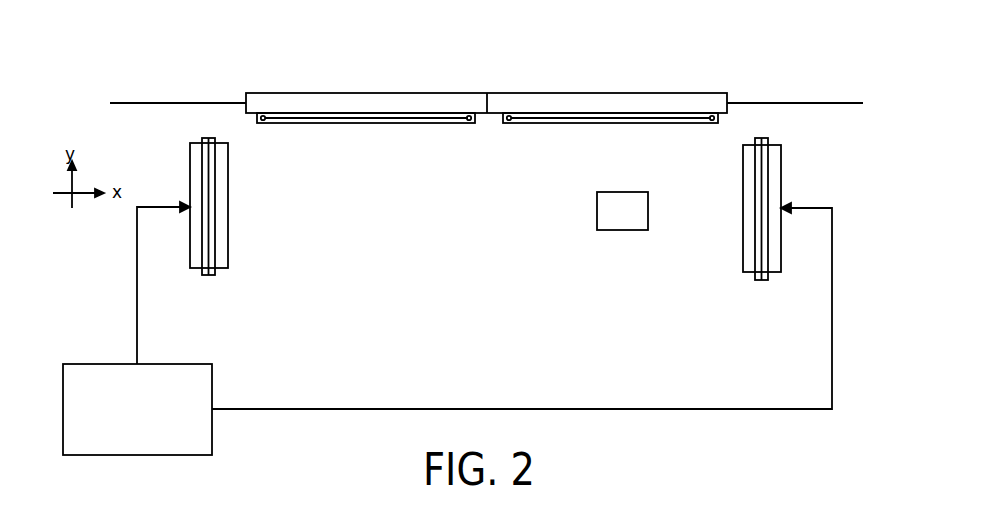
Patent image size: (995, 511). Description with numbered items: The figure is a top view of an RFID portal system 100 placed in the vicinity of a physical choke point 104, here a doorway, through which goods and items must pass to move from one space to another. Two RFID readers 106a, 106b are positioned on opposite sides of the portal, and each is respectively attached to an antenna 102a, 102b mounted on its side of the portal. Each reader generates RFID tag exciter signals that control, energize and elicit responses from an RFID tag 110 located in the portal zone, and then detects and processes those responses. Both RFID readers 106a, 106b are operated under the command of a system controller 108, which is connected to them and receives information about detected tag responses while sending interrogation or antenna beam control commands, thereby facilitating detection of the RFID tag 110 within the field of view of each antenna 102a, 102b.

The RFID portal system 100 is at (783, 80).
The antenna 102a is at (203, 273).
The antenna 102b is at (764, 281).
The physical choke point 104 is at (647, 82).
The RFID reader 106a is at (190, 162).
The RFID reader 106b is at (772, 147).
The system controller 108 is at (447, 328).
The RFID tag 110 is at (622, 211).